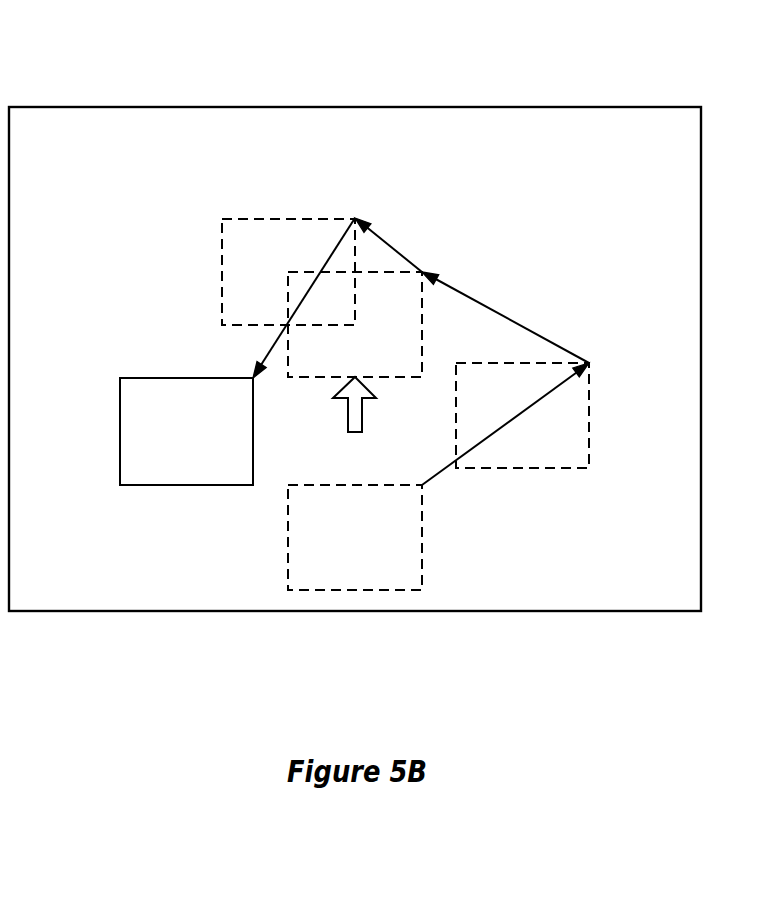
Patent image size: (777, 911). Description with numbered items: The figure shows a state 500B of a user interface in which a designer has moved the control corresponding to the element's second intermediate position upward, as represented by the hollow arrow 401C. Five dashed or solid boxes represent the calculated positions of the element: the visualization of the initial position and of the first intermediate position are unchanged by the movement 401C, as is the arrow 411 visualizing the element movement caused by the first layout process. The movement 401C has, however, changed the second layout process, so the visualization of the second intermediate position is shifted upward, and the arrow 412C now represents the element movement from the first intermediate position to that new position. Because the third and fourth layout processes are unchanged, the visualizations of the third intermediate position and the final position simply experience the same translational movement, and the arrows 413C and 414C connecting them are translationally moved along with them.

The state of the user interface 500B is at (328, 36).
The arrow representing the movement 401C is at (348, 421).
The visualization of the first layout process 411 is at (432, 478).
The arrow representing the changed second layout process 412C is at (512, 319).
The translationally moved arrow for the third layout process 413C is at (402, 258).
The translationally moved arrow for the fourth layout process 414C is at (272, 343).